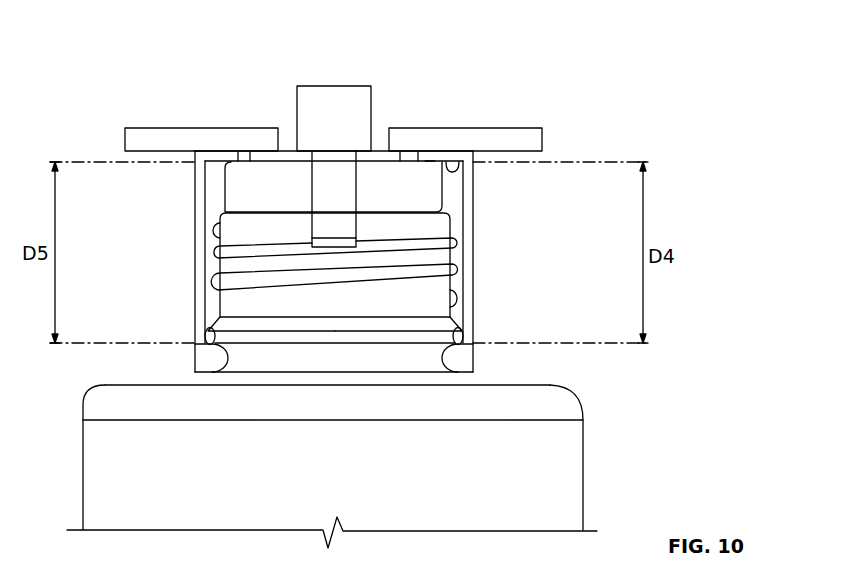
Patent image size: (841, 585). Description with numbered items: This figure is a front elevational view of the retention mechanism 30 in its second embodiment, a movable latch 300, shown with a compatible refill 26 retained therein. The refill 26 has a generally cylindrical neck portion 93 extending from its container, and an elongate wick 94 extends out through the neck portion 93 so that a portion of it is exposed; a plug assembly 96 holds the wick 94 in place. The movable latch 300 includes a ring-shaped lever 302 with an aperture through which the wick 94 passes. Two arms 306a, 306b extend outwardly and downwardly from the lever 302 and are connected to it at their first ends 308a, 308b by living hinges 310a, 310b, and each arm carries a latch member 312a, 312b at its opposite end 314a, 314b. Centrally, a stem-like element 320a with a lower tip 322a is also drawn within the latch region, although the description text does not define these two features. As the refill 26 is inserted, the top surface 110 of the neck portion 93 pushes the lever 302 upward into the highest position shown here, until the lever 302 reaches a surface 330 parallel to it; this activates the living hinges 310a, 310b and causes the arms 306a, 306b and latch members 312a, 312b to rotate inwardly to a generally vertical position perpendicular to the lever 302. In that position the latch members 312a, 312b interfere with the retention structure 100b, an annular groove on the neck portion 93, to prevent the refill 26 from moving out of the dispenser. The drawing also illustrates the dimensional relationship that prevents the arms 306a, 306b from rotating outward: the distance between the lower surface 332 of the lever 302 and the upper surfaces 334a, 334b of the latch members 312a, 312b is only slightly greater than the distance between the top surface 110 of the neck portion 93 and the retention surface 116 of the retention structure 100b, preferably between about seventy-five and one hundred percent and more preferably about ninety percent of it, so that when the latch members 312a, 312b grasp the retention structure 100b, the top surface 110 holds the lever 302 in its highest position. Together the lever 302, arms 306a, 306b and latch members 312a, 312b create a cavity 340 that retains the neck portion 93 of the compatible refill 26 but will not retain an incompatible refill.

The compatible refill 26 is at (609, 420).
The retention mechanism 30 is at (612, 140).
The neck portion 93 is at (438, 288).
The wick 94 is at (327, 87).
The plug assembly 96 is at (460, 207).
The retention structure 100b is at (455, 365).
The top surface of the neck portion 110 is at (400, 160).
The retention surface 116 is at (215, 348).
The movable latch 300 is at (484, 254).
The ring-shaped lever 302 is at (288, 150).
The first arm 306a is at (200, 209).
The second arm 306b is at (468, 229).
The first end of the first arm 308a is at (195, 170).
The first end of the second arm 308b is at (475, 167).
The first living hinge 310a is at (237, 157).
The second living hinge 310b is at (430, 157).
The first latch member 312a is at (222, 362).
The second latch member 312b is at (445, 358).
The end of the first arm 314a is at (208, 318).
The end of the second arm 314b is at (475, 313).
The valve stem 320a is at (340, 187).
The stem tip 322a is at (333, 243).
The surface parallel to the lever 330 is at (152, 138).
The lower surface of the lever 332 is at (458, 163).
The upper surface of the first latch member 334a is at (205, 326).
The upper surface of the second latch member 334b is at (462, 325).
The cavity 340 is at (462, 213).